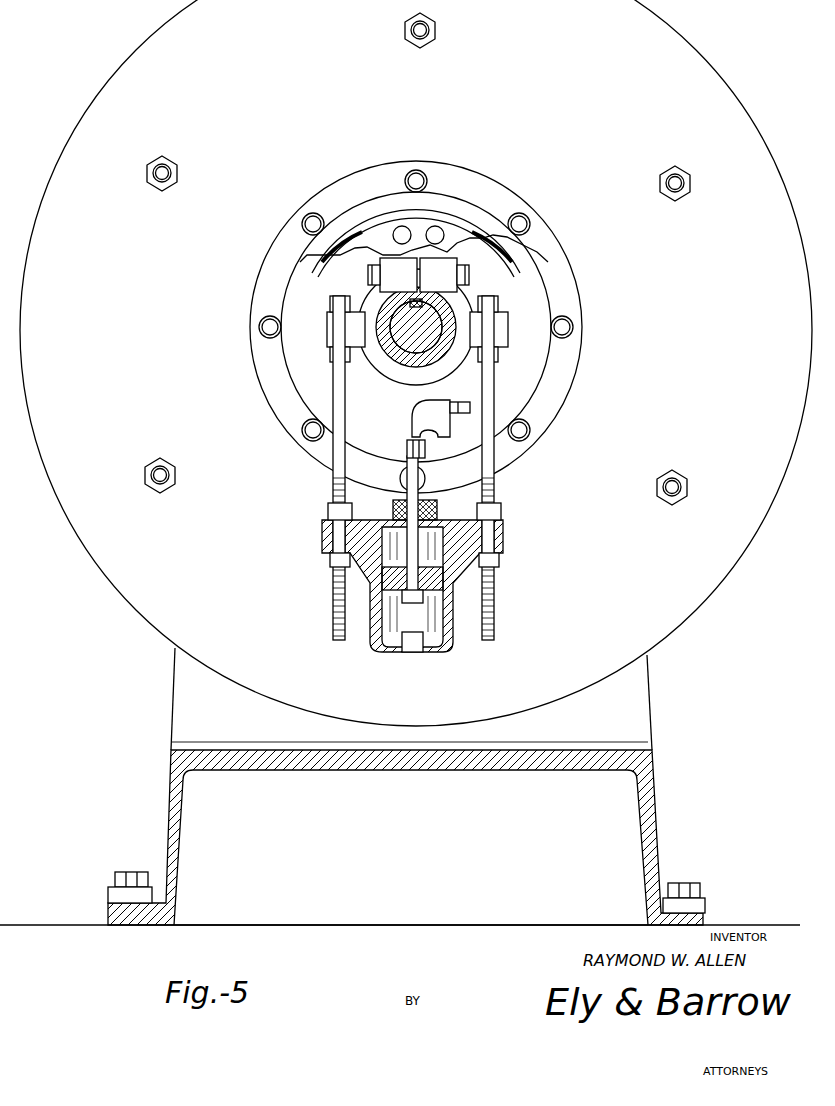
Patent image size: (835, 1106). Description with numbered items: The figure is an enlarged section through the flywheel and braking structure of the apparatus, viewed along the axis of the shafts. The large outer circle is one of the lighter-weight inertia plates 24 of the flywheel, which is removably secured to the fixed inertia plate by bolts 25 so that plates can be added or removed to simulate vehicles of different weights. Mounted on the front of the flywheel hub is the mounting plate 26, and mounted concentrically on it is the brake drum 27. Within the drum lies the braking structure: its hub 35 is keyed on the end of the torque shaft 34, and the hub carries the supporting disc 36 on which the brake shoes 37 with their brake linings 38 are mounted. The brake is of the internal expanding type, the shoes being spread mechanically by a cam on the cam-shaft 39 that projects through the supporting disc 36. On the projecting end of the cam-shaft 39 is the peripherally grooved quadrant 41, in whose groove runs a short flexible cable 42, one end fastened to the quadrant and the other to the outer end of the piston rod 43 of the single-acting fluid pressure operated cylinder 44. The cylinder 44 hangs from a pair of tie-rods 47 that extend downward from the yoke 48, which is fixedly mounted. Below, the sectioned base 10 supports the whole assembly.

The base 10 is at (652, 803).
The inertia plate 24 is at (688, 62).
The bolt 25 is at (435, 30).
The mounting plate 26 is at (500, 204).
The brake drum 27 is at (375, 212).
The torque shaft 34 is at (447, 307).
The hub 35 is at (383, 306).
The supporting disc 36 is at (530, 258).
The brake shoe 37 is at (382, 237).
The brake lining 38 is at (338, 243).
The cam-shaft 39 is at (442, 433).
The quadrant 41 is at (463, 408).
The flexible cable 42 is at (411, 418).
The piston rod 43 is at (405, 485).
The fluid pressure operated cylinder 44 is at (373, 613).
The tie-rod 47 is at (340, 452).
The yoke 48 is at (384, 360).